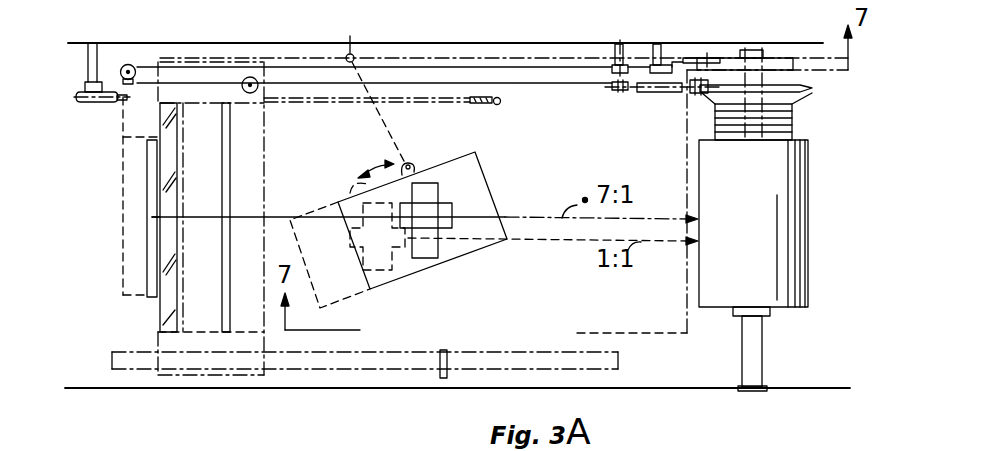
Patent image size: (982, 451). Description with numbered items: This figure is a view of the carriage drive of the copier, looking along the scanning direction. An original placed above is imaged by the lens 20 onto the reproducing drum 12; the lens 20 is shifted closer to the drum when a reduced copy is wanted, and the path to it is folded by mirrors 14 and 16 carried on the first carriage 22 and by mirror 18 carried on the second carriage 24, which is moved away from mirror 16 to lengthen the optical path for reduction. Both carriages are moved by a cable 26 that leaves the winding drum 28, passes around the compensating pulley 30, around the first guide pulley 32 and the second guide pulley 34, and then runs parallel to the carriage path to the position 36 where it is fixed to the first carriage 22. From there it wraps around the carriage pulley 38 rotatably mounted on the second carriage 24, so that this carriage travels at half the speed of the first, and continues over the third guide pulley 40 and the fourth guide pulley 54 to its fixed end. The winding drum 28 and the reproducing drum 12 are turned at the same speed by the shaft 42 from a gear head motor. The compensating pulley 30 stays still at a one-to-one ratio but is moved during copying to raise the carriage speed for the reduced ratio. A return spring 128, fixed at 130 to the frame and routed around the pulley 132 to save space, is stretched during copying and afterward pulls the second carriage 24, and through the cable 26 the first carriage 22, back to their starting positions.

The reproducing drum 12 is at (808, 168).
The mirror 14 is at (177, 128).
The mirror 16 is at (230, 186).
The mirror 18 is at (147, 190).
The lens 20 is at (440, 200).
The first carriage 22 is at (265, 137).
The second carriage 24 is at (122, 287).
The cable 26 is at (563, 84).
The winding drum 28 is at (812, 90).
The compensating pulley 30 is at (690, 96).
The first guide pulley 32 is at (660, 93).
The second guide pulley 34 is at (620, 91).
The cable fixing position 36 is at (258, 80).
The carriage pulley 38 is at (130, 64).
The third guide pulley 40 is at (617, 47).
The shaft 42 is at (762, 361).
The fourth guide pulley 54 is at (657, 48).
The spring 128 is at (464, 103).
The spring fixing point 130 is at (498, 105).
The pulley 132 is at (93, 102).